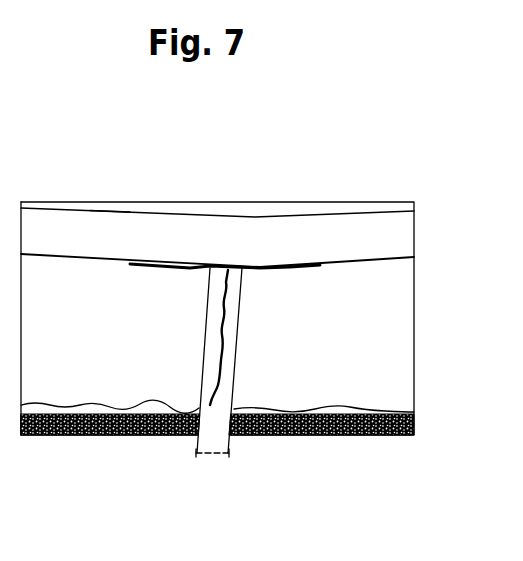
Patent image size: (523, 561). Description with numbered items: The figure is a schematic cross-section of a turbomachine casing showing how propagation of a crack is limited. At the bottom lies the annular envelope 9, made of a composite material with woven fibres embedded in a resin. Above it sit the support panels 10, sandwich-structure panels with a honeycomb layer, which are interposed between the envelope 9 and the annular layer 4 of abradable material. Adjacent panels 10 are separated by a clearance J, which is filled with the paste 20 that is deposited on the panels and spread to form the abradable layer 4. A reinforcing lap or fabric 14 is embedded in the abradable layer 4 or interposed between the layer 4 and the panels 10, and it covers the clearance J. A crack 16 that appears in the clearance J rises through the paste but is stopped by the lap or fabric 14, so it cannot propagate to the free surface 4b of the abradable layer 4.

The paste 20 is at (400, 242).
The annular layer of abradable material 4 is at (336, 228).
The free surface of the abradable layer 4b is at (107, 210).
The reinforcing laps or fabrics 14 is at (283, 266).
The crack 16 is at (226, 332).
The support panels 10 is at (67, 287).
The annular envelope 9 is at (364, 435).
The clearance J is at (217, 453).